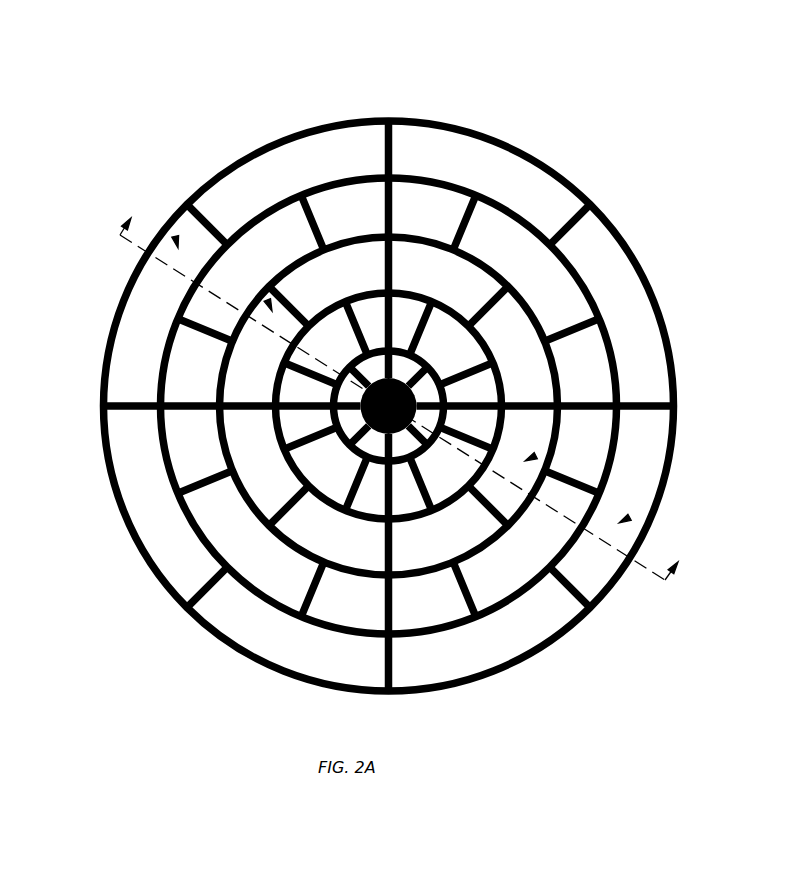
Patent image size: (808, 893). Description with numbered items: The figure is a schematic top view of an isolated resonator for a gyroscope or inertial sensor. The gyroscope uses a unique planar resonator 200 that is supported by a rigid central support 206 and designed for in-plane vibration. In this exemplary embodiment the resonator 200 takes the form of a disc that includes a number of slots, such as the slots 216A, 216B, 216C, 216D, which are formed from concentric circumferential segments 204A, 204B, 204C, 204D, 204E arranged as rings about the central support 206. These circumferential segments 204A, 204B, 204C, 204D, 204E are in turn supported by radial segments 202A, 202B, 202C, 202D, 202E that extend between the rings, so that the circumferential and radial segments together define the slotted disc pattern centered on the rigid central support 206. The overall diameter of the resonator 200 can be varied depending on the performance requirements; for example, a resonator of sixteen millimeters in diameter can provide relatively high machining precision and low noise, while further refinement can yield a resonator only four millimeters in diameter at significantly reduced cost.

The planar resonator 200 is at (631, 91).
The radial segment 202A is at (445, 422).
The radial segment 202B is at (470, 375).
The radial segment 202C is at (497, 310).
The radial segment 202D is at (470, 223).
The radial segment 202E is at (388, 145).
The circumferential segment 204A is at (340, 413).
The circumferential segment 204B is at (298, 471).
The circumferential segment 204C is at (255, 515).
The circumferential segment 204D is at (253, 590).
The circumferential segment 204E is at (243, 650).
The rigid central support 206 is at (382, 400).
The slot 216A is at (176, 240).
The slot 216B is at (268, 302).
The slot 216C is at (532, 457).
The slot 216D is at (626, 519).